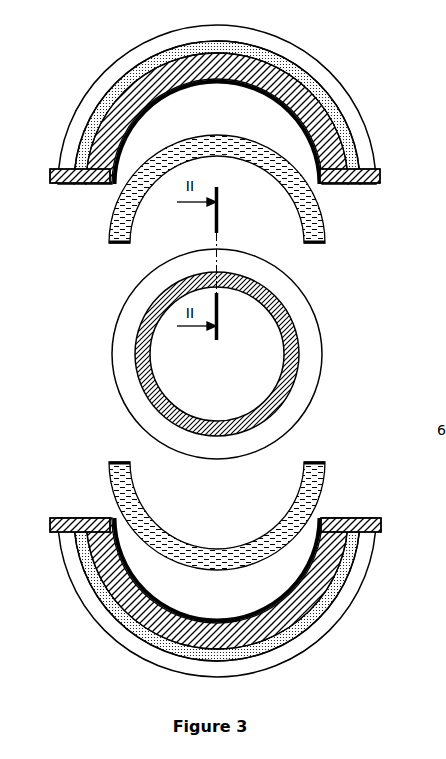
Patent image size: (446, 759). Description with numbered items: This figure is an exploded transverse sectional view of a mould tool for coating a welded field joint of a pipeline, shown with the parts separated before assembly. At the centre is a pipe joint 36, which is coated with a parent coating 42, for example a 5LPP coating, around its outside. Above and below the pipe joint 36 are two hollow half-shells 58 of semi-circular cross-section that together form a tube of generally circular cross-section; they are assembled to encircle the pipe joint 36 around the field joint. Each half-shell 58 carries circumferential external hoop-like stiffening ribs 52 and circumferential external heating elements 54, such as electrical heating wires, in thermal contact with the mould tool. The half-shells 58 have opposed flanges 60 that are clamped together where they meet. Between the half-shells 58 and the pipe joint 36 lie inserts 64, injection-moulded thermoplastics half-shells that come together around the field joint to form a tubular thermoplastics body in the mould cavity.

The pipe joint 36 is at (287, 352).
The parent coating 42 is at (313, 365).
The stiffening ribs 52 is at (85, 115).
The heating elements 54 is at (125, 82).
The half-shells 58 is at (331, 145).
The flanges 60 is at (78, 180).
The inserts 64 is at (286, 177).